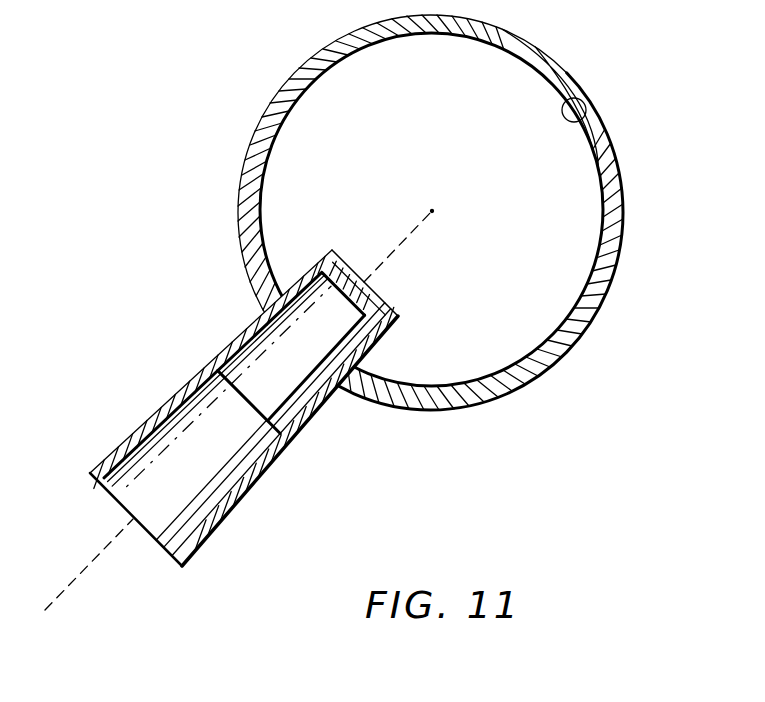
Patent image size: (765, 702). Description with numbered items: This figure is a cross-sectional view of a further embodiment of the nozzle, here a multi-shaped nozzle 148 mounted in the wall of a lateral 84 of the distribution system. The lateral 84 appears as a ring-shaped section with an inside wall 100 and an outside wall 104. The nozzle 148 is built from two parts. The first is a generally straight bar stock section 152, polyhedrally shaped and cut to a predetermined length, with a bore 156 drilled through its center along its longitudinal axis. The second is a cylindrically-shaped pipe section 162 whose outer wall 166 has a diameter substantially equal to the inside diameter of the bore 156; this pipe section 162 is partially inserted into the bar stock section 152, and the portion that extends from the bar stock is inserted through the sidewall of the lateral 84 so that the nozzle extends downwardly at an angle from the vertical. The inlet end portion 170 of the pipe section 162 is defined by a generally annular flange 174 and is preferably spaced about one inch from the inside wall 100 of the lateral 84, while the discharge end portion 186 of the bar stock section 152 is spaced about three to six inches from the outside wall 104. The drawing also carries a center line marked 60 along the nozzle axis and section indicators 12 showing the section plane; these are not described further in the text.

The outside wall 104 is at (630, 208).
The lateral 84 is at (535, 56).
The inside wall 100 is at (578, 101).
The multi-shaped nozzle 148 is at (235, 415).
The discharge end portion 186 is at (105, 462).
The inlet end portion 170 is at (315, 265).
The straight bar stock section 152 is at (213, 517).
The bore 156 is at (158, 523).
The cylindrically-shaped pipe section 162 is at (292, 297).
The outer wall 166 is at (357, 352).
The annular flange 174 is at (387, 306).
The longitudinal axis 60 is at (93, 553).
The section line 12- 12 is at (212, 320).